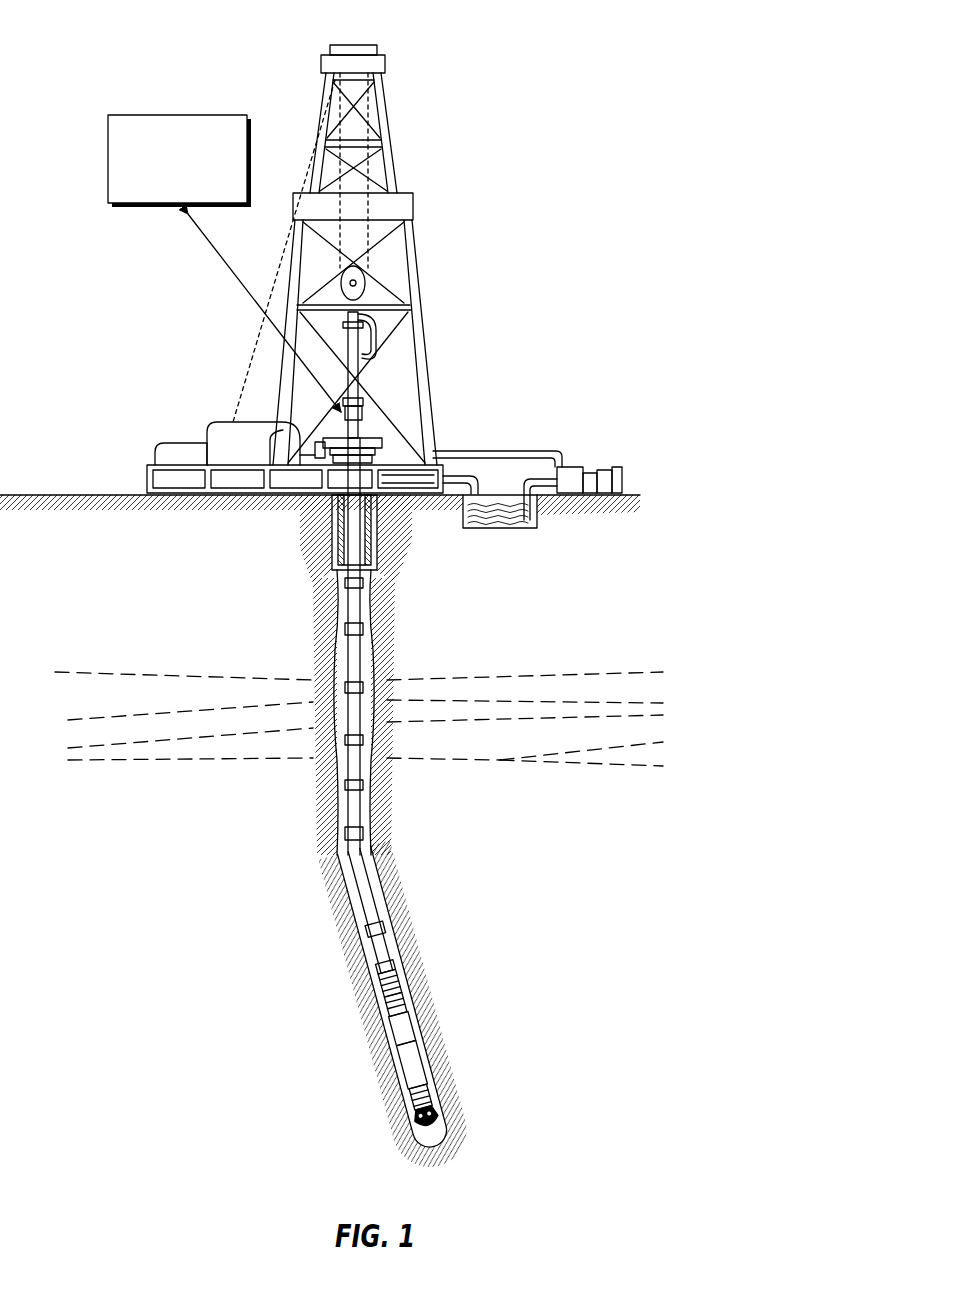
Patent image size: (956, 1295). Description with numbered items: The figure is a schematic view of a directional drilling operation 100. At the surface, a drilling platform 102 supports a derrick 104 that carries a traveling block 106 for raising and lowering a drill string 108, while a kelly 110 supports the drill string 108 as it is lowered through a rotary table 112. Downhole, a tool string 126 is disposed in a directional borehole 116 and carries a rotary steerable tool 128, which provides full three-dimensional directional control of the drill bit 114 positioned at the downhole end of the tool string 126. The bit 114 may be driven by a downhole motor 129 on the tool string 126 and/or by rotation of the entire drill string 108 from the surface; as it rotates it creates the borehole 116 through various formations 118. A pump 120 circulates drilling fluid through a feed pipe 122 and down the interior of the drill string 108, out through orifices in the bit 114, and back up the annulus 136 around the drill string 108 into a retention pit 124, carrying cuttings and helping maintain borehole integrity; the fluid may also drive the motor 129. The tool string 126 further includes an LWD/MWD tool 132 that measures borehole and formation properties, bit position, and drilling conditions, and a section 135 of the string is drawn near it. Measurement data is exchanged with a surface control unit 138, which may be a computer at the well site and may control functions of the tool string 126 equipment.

The drilling system 100 is at (540, 45).
The drilling platform 102 is at (147, 478).
The derrick 104 is at (400, 132).
The traveling block 106 is at (370, 285).
The drill string 108 is at (342, 605).
The kelly 110 is at (355, 338).
The rotary table 112 is at (377, 443).
The drill bit 114 is at (426, 1117).
The directional borehole 116 is at (374, 666).
The formations 118 is at (697, 665).
The pump 120 is at (572, 467).
The feed pipe 122 is at (493, 452).
The retention pit 124 is at (500, 517).
The tool string 126 is at (447, 994).
The rotary steerable tool 128 is at (414, 1075).
The downhole motor 129 is at (402, 1029).
The LWD/MWD tool 132 is at (395, 1004).
The stabilizer 135 is at (390, 983).
The annulus 136 is at (340, 815).
The surface control unit 138 is at (118, 114).